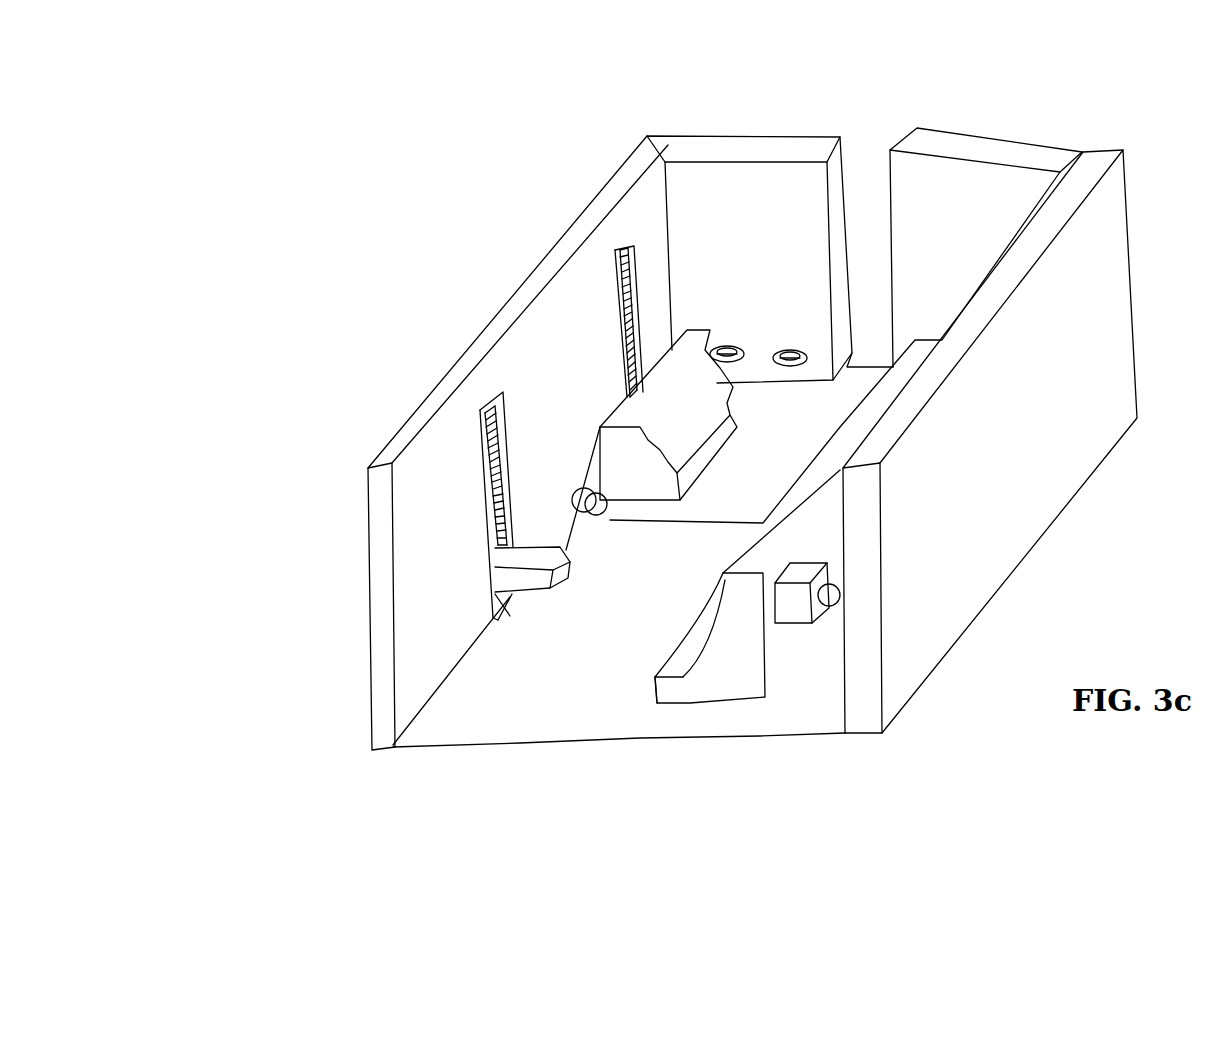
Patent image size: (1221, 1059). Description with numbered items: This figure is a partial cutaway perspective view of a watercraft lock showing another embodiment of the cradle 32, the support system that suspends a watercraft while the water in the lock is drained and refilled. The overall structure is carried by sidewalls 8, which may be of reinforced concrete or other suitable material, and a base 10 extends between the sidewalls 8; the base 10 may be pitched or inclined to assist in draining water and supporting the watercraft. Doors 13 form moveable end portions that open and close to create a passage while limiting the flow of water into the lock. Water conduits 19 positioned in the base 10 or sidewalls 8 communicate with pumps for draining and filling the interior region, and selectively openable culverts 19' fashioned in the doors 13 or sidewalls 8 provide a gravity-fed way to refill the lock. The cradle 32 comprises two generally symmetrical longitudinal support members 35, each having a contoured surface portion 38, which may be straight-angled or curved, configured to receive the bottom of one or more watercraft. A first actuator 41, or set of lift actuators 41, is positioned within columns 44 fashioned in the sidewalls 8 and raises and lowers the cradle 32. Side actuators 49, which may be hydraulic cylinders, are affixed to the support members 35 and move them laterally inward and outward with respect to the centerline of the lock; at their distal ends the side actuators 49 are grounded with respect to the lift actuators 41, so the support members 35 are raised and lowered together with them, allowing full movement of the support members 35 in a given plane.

The sidewalls 8 is at (952, 567).
The base 10 is at (521, 723).
The doors 13 is at (925, 197).
The water conduits 19 is at (466, 362).
The culverts 19' is at (763, 204).
The cradle 32 is at (458, 603).
The longitudinal support members 35 is at (670, 420).
The contoured surface portion 38 is at (687, 395).
The first actuator 41 is at (490, 487).
The columns 44 is at (493, 520).
The side actuators 49 is at (477, 570).